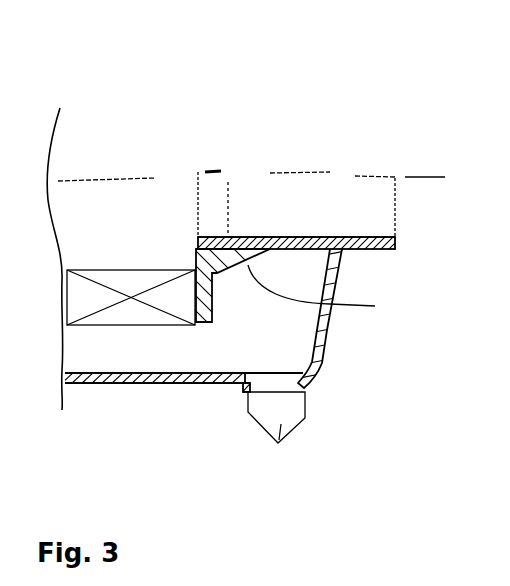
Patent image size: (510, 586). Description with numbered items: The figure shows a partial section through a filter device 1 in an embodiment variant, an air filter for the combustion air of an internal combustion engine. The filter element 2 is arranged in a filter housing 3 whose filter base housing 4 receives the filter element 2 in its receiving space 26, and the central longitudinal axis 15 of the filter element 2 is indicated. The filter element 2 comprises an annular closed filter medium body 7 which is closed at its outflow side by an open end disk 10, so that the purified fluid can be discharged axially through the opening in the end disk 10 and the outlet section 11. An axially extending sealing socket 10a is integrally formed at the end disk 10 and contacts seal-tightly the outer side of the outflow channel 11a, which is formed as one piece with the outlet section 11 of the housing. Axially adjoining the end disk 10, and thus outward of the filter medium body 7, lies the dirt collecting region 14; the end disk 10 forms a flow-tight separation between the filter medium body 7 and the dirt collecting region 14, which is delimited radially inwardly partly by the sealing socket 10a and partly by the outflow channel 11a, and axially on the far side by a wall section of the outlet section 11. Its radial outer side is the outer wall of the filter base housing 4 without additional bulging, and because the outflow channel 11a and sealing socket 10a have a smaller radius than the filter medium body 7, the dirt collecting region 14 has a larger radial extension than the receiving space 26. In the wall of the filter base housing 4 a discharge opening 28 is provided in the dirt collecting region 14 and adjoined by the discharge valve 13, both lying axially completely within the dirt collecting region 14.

The filter device 1 is at (326, 72).
The filter element 2 is at (134, 154).
The filter housing 3 is at (100, 388).
The filter base housing 4 is at (147, 384).
The filter medium body 7 is at (75, 307).
The end disk 10 is at (212, 304).
The sealing socket 10a is at (341, 293).
The outlet section 11 is at (373, 248).
The outflow channel 11a is at (297, 240).
The discharge valve 13 is at (300, 419).
The dirt collecting region 14 is at (304, 338).
The central longitudinal axis 15 is at (430, 180).
The receiving space 26 is at (85, 357).
The discharge opening 28 is at (293, 383).